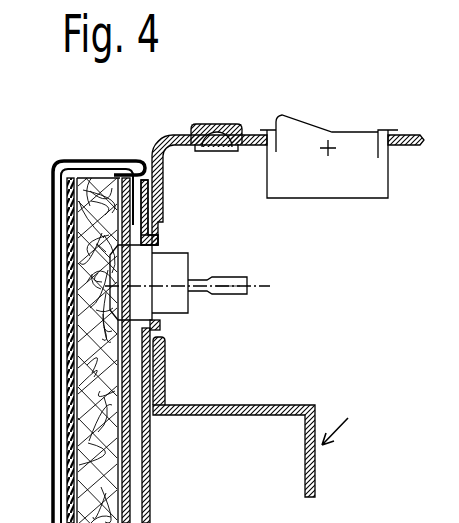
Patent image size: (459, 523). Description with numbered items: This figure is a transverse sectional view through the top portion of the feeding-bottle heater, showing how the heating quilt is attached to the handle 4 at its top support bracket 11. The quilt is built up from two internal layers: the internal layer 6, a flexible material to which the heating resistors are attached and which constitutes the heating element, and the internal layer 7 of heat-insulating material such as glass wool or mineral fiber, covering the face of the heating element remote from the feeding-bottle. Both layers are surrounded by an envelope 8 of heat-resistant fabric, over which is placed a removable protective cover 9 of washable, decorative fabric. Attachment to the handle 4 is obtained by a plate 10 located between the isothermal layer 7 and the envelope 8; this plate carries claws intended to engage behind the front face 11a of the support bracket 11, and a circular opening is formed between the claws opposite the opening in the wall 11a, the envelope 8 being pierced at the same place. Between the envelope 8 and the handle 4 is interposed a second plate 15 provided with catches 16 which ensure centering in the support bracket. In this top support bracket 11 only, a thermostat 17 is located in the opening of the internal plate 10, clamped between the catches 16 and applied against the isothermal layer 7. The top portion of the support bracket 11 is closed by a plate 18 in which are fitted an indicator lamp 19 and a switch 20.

The handle 4 is at (343, 416).
The internal layer 6 is at (70, 338).
The internal layer 7 is at (83, 180).
The envelope 8 is at (54, 221).
The protective cover 9 is at (60, 278).
The plate 10 is at (148, 200).
The support bracket 11 is at (275, 410).
The front face 11a is at (160, 375).
The second plate 15 is at (160, 215).
The catches 16 is at (157, 325).
The thermostat 17 is at (172, 270).
The plate 18 is at (183, 134).
The indicator lamp 19 is at (232, 123).
The switch 20 is at (353, 145).